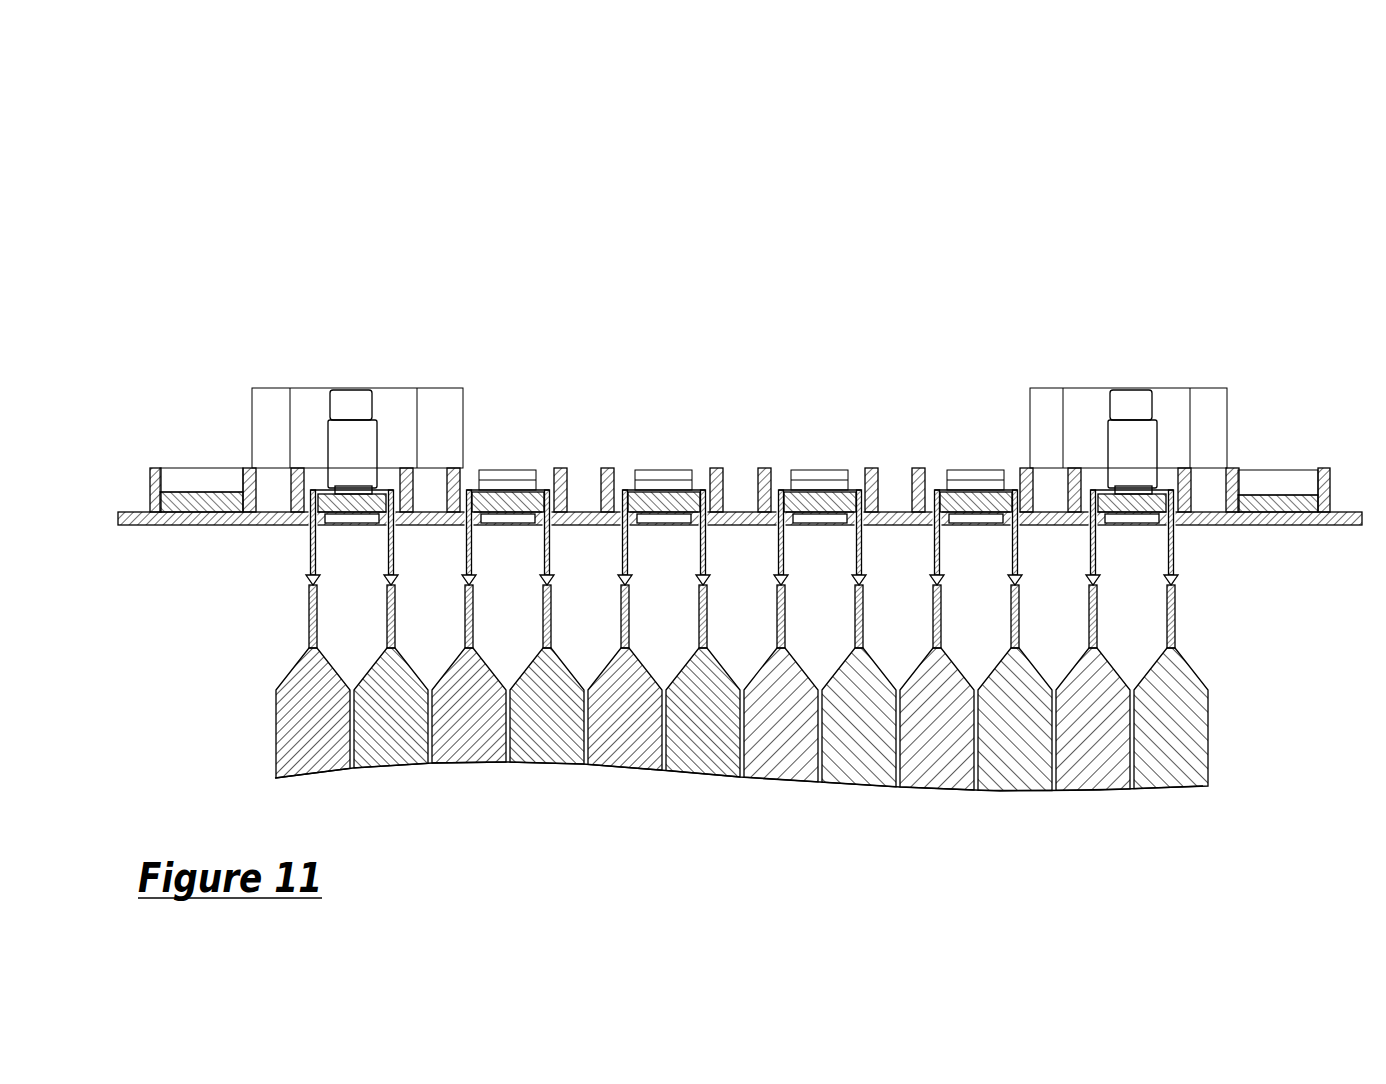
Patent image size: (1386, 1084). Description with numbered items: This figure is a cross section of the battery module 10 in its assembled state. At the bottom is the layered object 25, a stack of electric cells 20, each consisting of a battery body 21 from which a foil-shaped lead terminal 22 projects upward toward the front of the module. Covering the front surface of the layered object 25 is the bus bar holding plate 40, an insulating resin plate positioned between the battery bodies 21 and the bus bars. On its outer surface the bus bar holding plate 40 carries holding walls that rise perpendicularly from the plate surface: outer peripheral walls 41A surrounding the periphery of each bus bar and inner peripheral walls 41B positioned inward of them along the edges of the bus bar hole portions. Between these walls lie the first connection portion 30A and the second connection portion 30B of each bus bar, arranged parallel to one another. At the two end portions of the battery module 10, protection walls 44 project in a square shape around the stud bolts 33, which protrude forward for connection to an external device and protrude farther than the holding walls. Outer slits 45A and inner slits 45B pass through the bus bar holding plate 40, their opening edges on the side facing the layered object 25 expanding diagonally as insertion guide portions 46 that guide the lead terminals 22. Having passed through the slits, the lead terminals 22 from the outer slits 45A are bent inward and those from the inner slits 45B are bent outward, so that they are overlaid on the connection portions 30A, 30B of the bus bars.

The battery module 10 is at (1123, 178).
The electric cell 20 is at (803, 688).
The battery body 21 is at (1147, 700).
The lead terminal 22 is at (1168, 592).
The layered object 25 is at (250, 757).
The first connection portion 30A is at (195, 490).
The second connection portion 30B is at (348, 490).
The stud bolt 33 is at (350, 395).
The bus bar holding plate 40 is at (737, 477).
The outer peripheral wall 41A is at (157, 468).
The inner peripheral wall 41B is at (297, 468).
The protection wall 44 is at (263, 388).
The outer slit 45A is at (397, 470).
The inner slit 45B is at (545, 470).
The insertion guide portion 46 is at (303, 527).